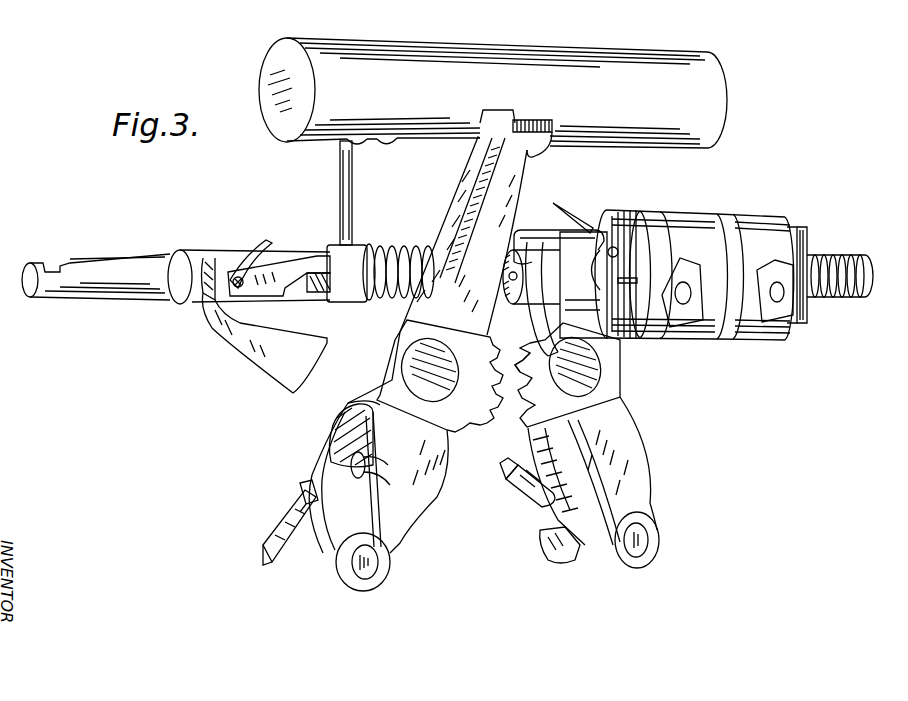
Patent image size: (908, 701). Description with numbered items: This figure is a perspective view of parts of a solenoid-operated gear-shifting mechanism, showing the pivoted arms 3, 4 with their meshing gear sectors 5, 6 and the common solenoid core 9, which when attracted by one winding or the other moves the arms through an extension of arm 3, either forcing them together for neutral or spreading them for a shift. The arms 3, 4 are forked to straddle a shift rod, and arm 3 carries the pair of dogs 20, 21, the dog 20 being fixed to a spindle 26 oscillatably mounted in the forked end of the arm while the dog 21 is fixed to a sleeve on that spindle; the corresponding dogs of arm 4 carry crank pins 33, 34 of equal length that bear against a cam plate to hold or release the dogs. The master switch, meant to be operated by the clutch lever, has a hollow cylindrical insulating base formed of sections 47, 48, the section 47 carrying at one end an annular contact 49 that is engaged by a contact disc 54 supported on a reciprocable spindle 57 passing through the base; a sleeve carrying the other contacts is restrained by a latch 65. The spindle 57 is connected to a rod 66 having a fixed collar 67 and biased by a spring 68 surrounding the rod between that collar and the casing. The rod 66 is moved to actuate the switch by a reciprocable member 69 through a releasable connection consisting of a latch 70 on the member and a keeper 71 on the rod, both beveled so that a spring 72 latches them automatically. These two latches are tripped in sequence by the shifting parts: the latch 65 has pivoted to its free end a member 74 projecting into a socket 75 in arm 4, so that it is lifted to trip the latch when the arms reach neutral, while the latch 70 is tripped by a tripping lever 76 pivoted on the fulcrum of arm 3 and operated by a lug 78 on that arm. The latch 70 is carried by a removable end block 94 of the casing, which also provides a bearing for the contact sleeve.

The core 9 is at (690, 60).
The pivoted arm 3 is at (428, 480).
The pivoted arm 4 is at (633, 465).
The gear sector 5 is at (484, 425).
The gear sector 6 is at (520, 426).
The dog 20 is at (343, 510).
The dog 21 is at (273, 560).
The spindle 26 is at (365, 568).
The crank pin 33 is at (520, 475).
The crank pin 34 is at (543, 548).
The insulating base section 47 is at (683, 216).
The insulating base section 48 is at (742, 217).
The annular contact 49 is at (788, 327).
The contact disc 54 is at (800, 304).
The spindle 57 is at (847, 294).
The latch 65 is at (548, 233).
The rod 66 is at (400, 247).
The collar 67 is at (526, 287).
The spring 68 is at (375, 302).
The member 69 is at (150, 287).
The latch 70 is at (277, 290).
The keeper 71 is at (336, 294).
The spring 72 is at (266, 243).
The member 74 is at (552, 288).
The socket 75 is at (525, 382).
The tripping lever 76 is at (243, 342).
The lug 78 is at (377, 473).
The end block 94 is at (633, 343).